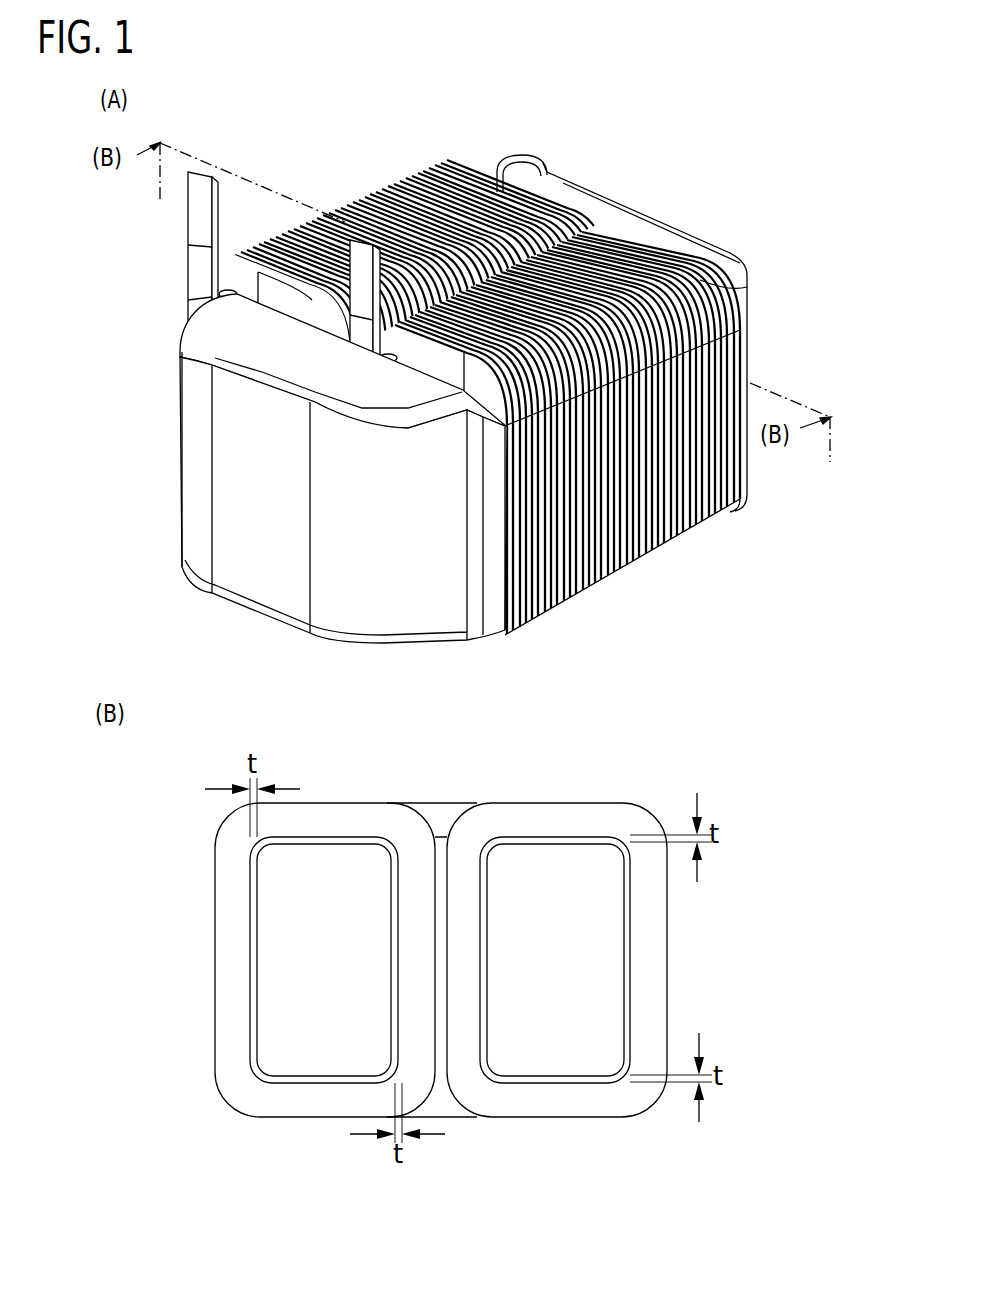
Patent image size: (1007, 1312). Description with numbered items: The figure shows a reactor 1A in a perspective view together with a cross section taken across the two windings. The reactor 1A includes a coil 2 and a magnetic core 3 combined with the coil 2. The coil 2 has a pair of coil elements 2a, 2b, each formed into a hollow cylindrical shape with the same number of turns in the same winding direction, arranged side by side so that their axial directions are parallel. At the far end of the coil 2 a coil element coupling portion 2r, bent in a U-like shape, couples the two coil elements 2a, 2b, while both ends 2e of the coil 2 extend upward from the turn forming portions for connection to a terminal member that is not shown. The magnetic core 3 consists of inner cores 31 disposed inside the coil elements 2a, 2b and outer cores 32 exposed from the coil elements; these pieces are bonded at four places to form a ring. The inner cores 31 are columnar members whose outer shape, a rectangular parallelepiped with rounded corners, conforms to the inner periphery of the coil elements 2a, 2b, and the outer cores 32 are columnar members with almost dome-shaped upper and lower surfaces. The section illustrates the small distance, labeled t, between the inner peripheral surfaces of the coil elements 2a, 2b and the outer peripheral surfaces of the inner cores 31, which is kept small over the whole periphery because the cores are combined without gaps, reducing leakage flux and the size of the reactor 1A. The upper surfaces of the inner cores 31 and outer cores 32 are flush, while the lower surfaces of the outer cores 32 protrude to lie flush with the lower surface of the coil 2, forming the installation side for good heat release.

The reactor 1A is at (452, 637).
The coil 2 is at (432, 599).
The coil element 2a is at (367, 193).
The coil element 2b is at (633, 577).
The coil element coupling portion 2r is at (527, 160).
The end of the coil 2e is at (193, 218).
The magnetic core 3 is at (422, 658).
The inner core 31 is at (472, 572).
The outer core 32 is at (660, 223).